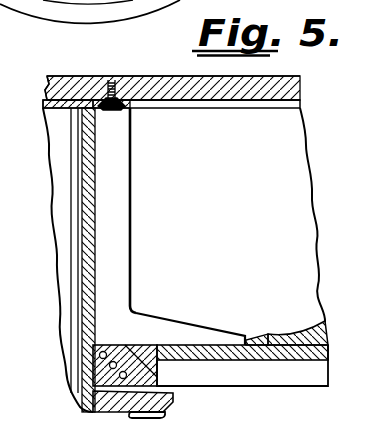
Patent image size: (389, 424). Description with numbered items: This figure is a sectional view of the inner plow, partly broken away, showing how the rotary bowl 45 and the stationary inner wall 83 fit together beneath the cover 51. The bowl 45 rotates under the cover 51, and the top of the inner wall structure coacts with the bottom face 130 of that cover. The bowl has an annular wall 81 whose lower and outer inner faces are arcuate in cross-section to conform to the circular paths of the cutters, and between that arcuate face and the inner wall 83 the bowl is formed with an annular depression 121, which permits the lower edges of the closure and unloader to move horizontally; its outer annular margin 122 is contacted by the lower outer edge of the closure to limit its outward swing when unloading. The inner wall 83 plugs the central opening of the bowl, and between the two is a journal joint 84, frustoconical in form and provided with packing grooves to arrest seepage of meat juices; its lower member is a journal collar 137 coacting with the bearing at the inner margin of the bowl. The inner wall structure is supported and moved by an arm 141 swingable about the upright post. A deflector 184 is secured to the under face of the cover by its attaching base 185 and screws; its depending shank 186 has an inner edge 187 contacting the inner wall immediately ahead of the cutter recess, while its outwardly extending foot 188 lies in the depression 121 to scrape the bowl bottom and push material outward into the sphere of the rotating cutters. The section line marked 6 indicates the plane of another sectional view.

The section line 6 is at (85, 10).
The cover 51 is at (270, 77).
The bottom face of the cover 130 is at (300, 93).
The attaching base 185 is at (124, 110).
The inner wall 83 is at (65, 217).
The inner edge 187 is at (95, 264).
The depending shank 186 is at (122, 247).
The deflector 184 is at (134, 207).
The outwardly extending foot 188 is at (158, 325).
The rotary bowl 45 is at (321, 258).
The outer annular margin 122 is at (262, 338).
The annular wall 81 is at (309, 330).
The annular depression 121 is at (212, 358).
The journal joint 84 is at (138, 336).
The journal collar 137 is at (102, 372).
The arm 141 is at (168, 405).